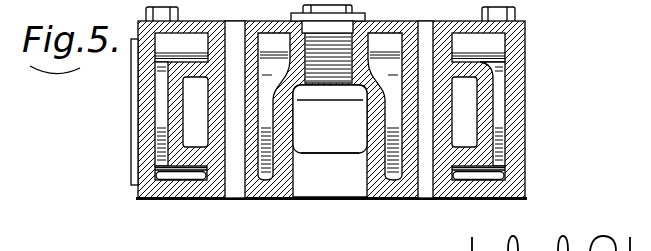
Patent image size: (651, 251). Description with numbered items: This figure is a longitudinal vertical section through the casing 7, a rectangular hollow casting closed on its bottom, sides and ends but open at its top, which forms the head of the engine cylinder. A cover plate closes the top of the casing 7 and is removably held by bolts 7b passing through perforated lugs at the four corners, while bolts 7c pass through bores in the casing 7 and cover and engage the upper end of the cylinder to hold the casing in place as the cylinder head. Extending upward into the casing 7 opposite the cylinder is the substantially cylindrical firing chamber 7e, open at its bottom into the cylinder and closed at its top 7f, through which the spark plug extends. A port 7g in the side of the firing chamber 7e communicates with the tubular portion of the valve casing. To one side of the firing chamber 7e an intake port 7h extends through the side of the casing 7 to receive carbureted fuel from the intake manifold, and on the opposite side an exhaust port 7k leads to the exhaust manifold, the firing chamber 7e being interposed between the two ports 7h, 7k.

The casing 7 is at (199, 200).
The bolts 7b is at (147, 12).
The bolts 7c is at (235, 184).
The firing chamber 7e is at (320, 92).
The top of the firing chamber 7f is at (362, 90).
The port 7g is at (350, 154).
The intake port 7h is at (139, 125).
The exhaust port 7k is at (467, 107).